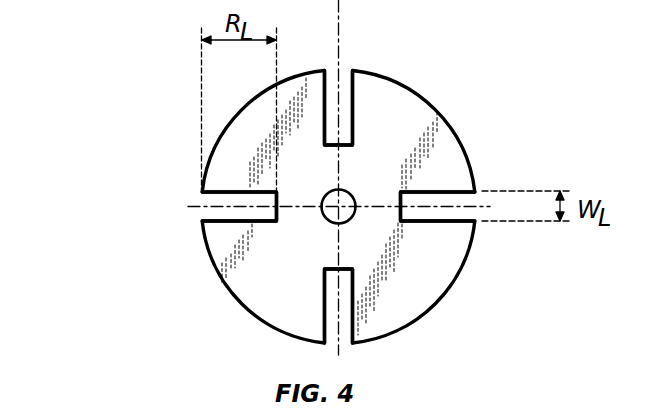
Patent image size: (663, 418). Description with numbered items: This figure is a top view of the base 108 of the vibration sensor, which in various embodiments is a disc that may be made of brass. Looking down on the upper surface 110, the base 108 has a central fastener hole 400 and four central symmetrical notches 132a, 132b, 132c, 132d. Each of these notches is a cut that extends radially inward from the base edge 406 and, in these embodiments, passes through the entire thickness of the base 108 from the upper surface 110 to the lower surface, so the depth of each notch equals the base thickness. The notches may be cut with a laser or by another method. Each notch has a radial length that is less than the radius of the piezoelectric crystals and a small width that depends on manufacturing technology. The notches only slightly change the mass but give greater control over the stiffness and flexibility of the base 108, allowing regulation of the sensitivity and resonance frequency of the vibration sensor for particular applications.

The base 108 is at (146, 119).
The upper surface 110 is at (255, 283).
The notch 132a is at (343, 78).
The notch 132b is at (478, 189).
The notch 132c is at (345, 333).
The notch 132d is at (202, 212).
The fastener hole 400 is at (356, 214).
The base edge 406 is at (433, 113).